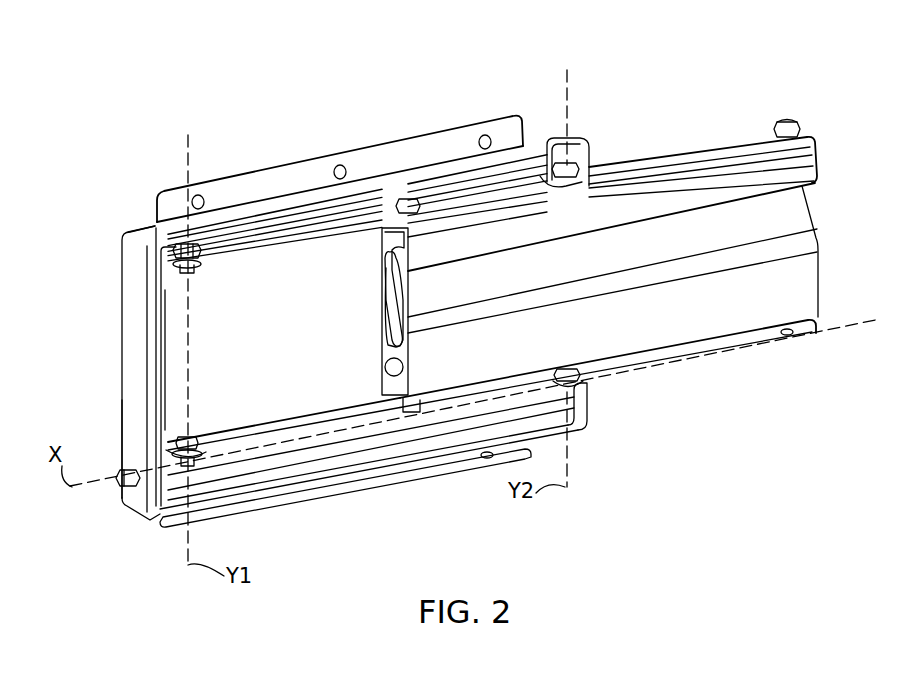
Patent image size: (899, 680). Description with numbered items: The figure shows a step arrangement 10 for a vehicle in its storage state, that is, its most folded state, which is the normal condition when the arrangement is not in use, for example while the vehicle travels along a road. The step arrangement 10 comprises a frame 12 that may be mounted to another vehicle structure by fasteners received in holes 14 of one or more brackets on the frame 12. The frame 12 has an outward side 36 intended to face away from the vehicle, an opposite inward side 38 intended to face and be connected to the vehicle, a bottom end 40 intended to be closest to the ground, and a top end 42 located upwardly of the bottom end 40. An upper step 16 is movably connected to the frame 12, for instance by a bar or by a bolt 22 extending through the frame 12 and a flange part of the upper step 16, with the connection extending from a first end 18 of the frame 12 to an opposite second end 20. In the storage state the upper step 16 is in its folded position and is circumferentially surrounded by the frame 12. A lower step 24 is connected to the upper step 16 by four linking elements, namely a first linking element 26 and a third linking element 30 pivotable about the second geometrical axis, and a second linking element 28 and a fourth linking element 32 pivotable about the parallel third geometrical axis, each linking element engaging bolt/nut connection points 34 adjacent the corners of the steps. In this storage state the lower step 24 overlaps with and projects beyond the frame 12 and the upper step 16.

The step arrangement 10 is at (784, 45).
The frame 12 is at (130, 374).
The holes 14 is at (343, 168).
The upper step 16 is at (207, 304).
The first end 18 is at (128, 436).
The second end 20 is at (590, 396).
The bolt 22 is at (118, 496).
The lower step 24 is at (758, 305).
The first linking element 26 is at (255, 240).
The second linking element 28 is at (660, 160).
The third linking element 30 is at (290, 418).
The fourth linking element 32 is at (697, 350).
The connection points 34 is at (572, 166).
The outward side 36 is at (150, 272).
The inward side 38 is at (122, 254).
The bottom end 40 is at (372, 490).
The top end 42 is at (398, 175).